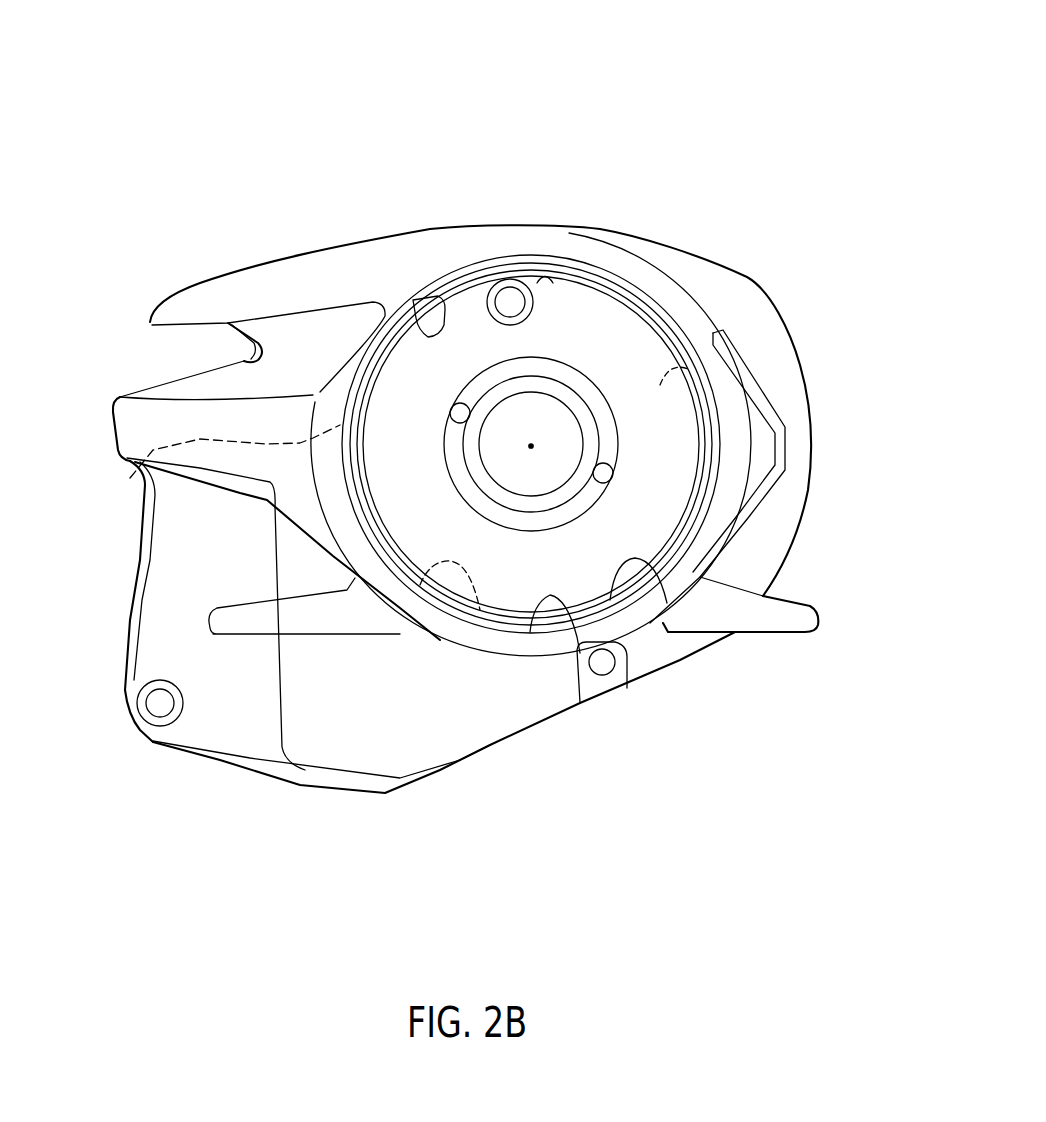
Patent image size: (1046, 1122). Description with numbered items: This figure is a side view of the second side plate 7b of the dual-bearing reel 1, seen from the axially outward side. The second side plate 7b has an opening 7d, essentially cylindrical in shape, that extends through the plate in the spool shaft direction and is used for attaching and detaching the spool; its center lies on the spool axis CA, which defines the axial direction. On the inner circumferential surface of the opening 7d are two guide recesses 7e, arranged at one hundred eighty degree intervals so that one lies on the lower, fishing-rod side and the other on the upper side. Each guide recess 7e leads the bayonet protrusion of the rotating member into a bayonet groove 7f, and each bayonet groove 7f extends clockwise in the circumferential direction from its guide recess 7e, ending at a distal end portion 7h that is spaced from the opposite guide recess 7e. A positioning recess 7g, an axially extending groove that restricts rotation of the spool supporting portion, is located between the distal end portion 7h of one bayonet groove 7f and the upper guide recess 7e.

The dual-bearing reel 1 is at (640, 115).
The second side plate 7b is at (330, 277).
The guide recess 7e is at (533, 275).
The positioning recess 7g is at (440, 298).
The bayonet groove 7f is at (672, 382).
The distal end portion 7h is at (130, 478).
The opening 7d is at (620, 593).
The spool axis CA is at (531, 444).